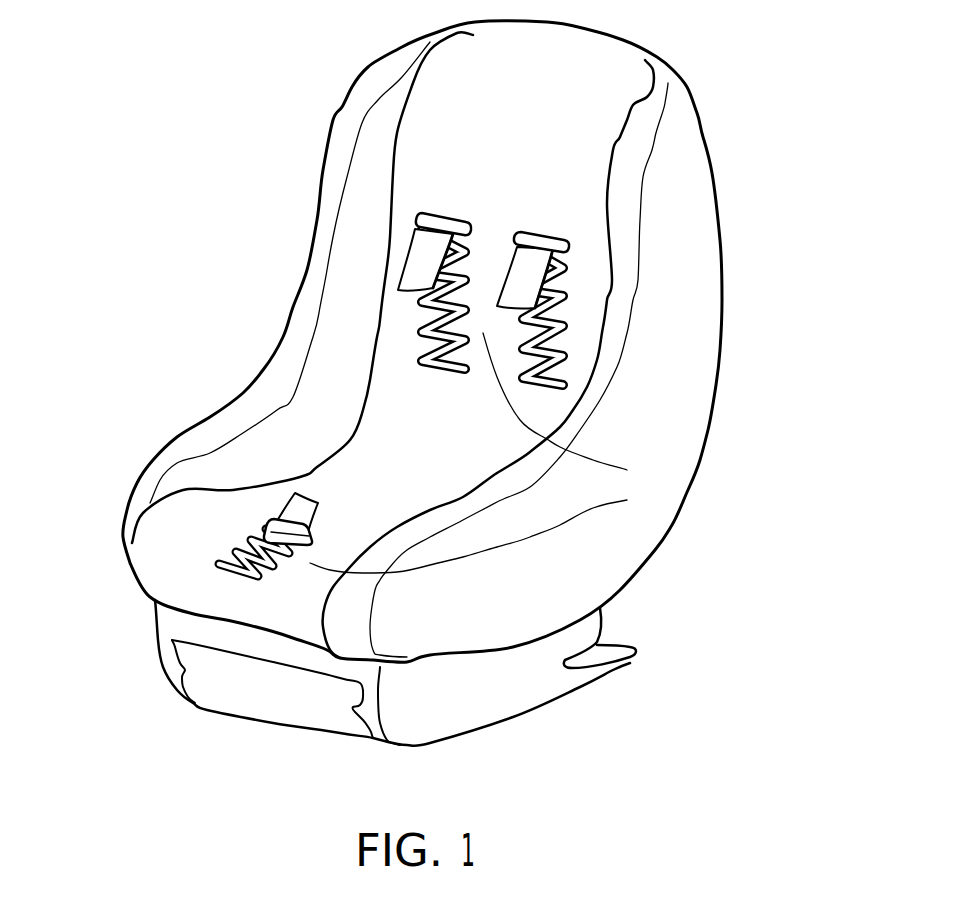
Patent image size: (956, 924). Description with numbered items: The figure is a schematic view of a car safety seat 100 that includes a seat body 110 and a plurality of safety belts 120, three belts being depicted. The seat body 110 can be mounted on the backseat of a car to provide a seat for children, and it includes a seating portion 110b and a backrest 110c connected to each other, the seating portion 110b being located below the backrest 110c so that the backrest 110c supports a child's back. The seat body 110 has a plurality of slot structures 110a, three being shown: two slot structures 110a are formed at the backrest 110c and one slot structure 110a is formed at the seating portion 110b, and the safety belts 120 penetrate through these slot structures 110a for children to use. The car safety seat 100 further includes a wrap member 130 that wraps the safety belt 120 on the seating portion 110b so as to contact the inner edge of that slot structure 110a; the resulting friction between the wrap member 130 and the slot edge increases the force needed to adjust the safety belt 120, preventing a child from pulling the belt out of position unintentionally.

The car safety seat 100 is at (798, 30).
The seat body 110 is at (782, 464).
The slot structure 110a is at (401, 346).
The seating portion 110b is at (627, 500).
The backrest 110c is at (627, 470).
The safety belt 120 is at (413, 258).
The wrap member 130 is at (277, 520).